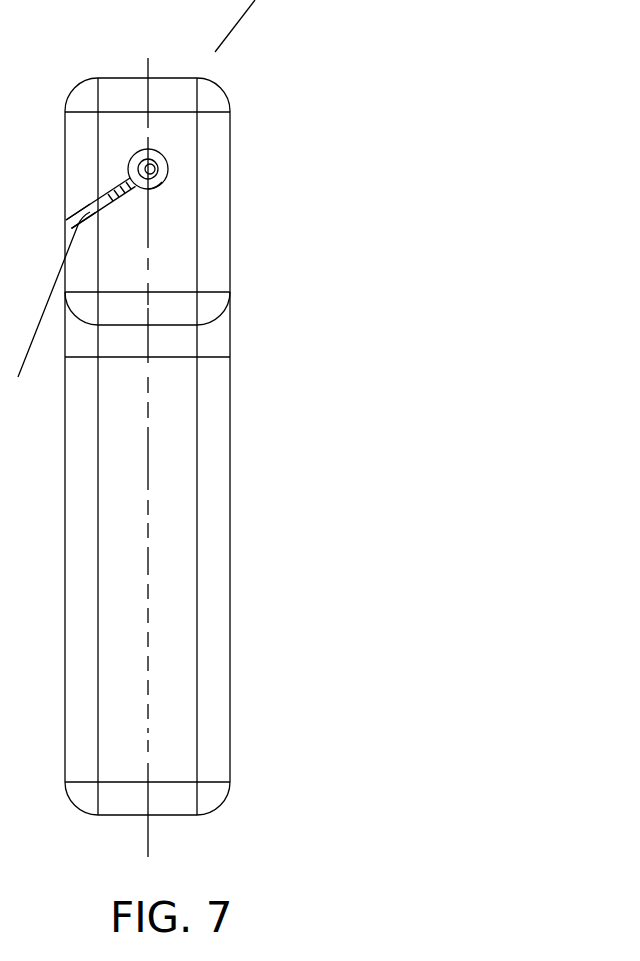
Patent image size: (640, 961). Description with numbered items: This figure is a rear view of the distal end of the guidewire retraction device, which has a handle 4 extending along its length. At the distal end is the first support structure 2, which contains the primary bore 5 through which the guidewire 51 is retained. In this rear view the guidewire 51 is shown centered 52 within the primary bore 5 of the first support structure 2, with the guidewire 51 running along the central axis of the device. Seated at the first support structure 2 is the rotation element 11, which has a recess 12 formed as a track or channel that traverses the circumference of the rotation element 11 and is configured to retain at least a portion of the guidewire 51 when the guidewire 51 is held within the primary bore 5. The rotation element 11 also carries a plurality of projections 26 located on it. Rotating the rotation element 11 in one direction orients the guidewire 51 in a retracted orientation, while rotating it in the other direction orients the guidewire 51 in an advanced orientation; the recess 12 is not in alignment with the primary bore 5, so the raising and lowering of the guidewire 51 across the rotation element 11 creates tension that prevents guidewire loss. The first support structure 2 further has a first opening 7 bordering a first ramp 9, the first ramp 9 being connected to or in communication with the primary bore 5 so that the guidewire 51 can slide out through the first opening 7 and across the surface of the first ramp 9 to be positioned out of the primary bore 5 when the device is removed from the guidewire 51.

The first support structure 2 is at (123, 103).
The handle 4 is at (218, 660).
The primary bore 5 is at (137, 158).
The first opening 7 is at (78, 212).
The first ramp 9 is at (48, 304).
The rotation element 11 is at (130, 182).
The recess 12 is at (165, 163).
The plurality of projections 26 is at (153, 188).
The guidewire 51 is at (158, 171).
The centered 52 is at (148, 448).